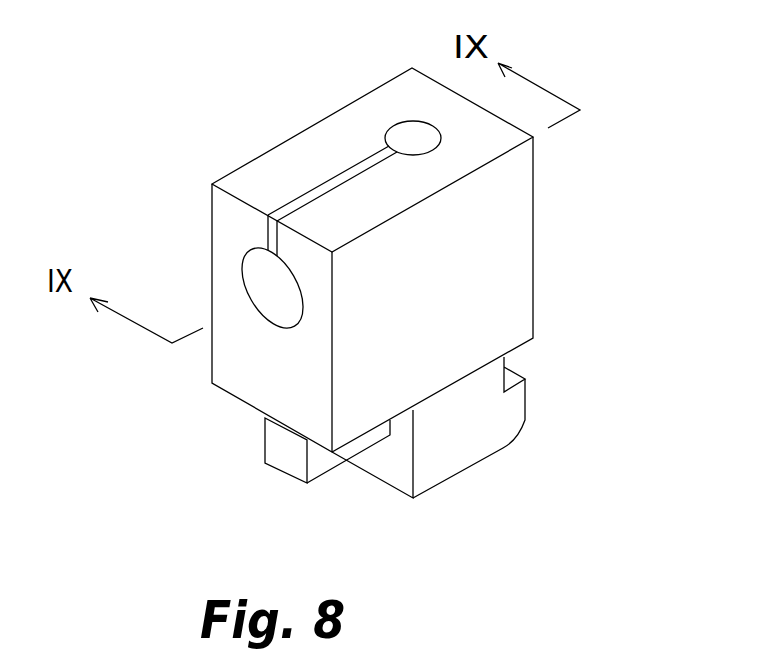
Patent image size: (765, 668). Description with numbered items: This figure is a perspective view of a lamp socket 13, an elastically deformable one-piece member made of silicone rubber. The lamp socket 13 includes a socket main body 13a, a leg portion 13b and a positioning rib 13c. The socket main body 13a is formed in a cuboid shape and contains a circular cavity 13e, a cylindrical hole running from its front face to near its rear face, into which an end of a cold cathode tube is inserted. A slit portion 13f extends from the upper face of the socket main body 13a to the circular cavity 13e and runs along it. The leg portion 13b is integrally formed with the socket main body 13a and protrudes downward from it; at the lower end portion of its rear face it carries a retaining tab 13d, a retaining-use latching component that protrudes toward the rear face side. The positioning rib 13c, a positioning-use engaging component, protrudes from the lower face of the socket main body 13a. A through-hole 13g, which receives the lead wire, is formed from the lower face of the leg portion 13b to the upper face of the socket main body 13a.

The lamp socket 13 is at (320, 77).
The socket main body 13a is at (520, 232).
The leg portion 13b is at (470, 438).
The positioning rib 13c is at (328, 465).
The retaining tab 13d is at (525, 397).
The circular cavity 13e is at (260, 315).
The slit portion 13f is at (313, 187).
The through-hole 13g is at (413, 122).